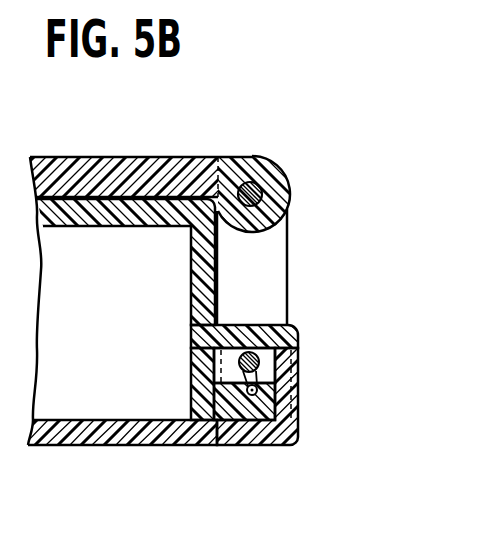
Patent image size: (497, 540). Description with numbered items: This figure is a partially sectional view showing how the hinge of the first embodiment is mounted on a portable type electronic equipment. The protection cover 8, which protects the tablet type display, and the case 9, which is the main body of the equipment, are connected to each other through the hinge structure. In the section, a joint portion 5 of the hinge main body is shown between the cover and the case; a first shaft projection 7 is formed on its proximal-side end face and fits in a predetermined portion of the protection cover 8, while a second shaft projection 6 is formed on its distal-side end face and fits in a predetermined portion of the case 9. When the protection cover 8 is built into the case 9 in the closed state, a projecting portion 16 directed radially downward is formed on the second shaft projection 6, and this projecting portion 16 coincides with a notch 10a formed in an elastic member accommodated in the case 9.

The protection cover 8 is at (105, 167).
The first shaft projection 7 is at (253, 178).
The joint portion 5 is at (262, 273).
The second shaft projection 6 is at (256, 360).
The projecting portion 16 is at (258, 391).
The case 9 is at (113, 447).
The notch 10a is at (223, 447).